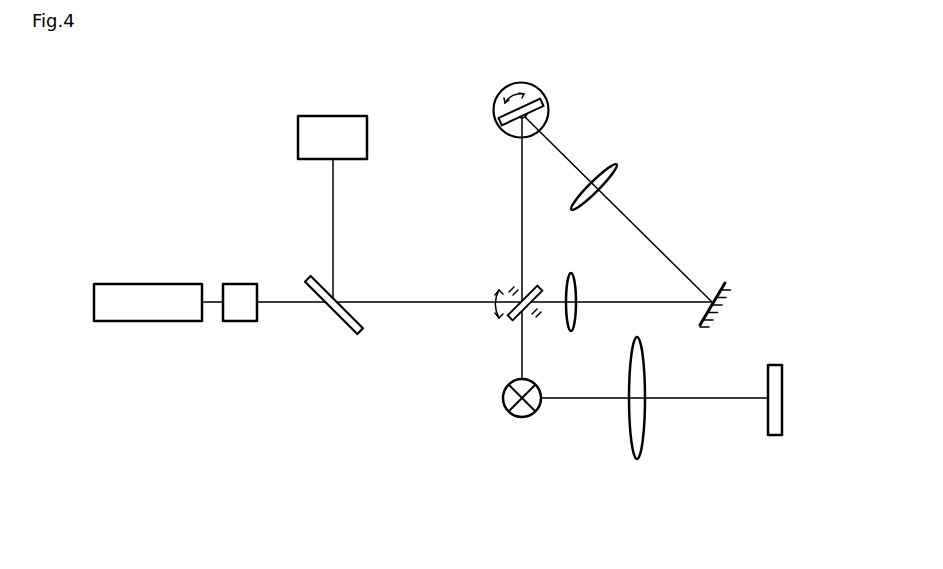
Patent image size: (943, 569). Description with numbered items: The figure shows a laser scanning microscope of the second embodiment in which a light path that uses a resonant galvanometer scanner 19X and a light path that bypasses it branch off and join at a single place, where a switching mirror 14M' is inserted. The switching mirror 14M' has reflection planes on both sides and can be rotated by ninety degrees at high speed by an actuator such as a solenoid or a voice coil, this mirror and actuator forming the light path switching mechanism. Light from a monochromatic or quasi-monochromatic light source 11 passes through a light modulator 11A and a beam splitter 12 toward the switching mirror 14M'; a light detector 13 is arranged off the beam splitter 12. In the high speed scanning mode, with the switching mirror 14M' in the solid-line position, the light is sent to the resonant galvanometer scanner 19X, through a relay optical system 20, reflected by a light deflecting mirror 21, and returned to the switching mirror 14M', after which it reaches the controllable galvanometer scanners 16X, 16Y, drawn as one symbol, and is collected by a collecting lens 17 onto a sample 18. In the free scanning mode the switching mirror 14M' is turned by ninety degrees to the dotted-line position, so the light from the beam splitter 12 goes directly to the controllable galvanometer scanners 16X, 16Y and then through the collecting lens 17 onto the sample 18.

The light source 11 is at (157, 296).
The light modulator 11A is at (240, 284).
The beam splitter 12 is at (318, 282).
The light detector 13 is at (331, 124).
The switching mirror 14M' is at (492, 284).
The controllable galvanometer scanner 16X is at (469, 412).
The controllable galvanometer scanner 16Y is at (507, 407).
The collecting lens 17 is at (636, 459).
The sample 18 is at (776, 436).
The resonant galvanometer scanner 19X is at (503, 85).
The relay optical system 20 is at (577, 292).
The light deflecting mirror 21 is at (718, 286).